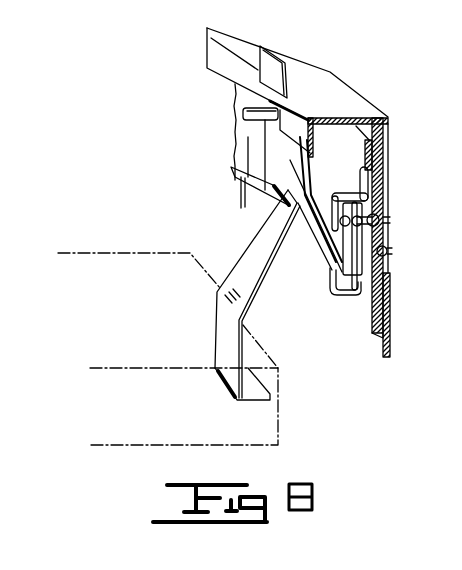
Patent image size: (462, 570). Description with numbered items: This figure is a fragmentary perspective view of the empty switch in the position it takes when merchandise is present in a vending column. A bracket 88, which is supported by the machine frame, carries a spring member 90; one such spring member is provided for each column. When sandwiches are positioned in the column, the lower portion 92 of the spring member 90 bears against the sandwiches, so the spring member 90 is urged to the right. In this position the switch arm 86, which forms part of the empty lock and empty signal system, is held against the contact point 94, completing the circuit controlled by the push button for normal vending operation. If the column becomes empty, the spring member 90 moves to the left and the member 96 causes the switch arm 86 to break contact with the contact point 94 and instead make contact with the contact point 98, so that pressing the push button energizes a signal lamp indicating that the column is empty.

The switch arm 86 is at (322, 289).
The bracket 88 is at (363, 103).
The spring member 90 is at (257, 241).
The lower portion 92 is at (220, 382).
The contact point 94 is at (340, 192).
The member 96 is at (343, 263).
The contact point 98 is at (387, 220).